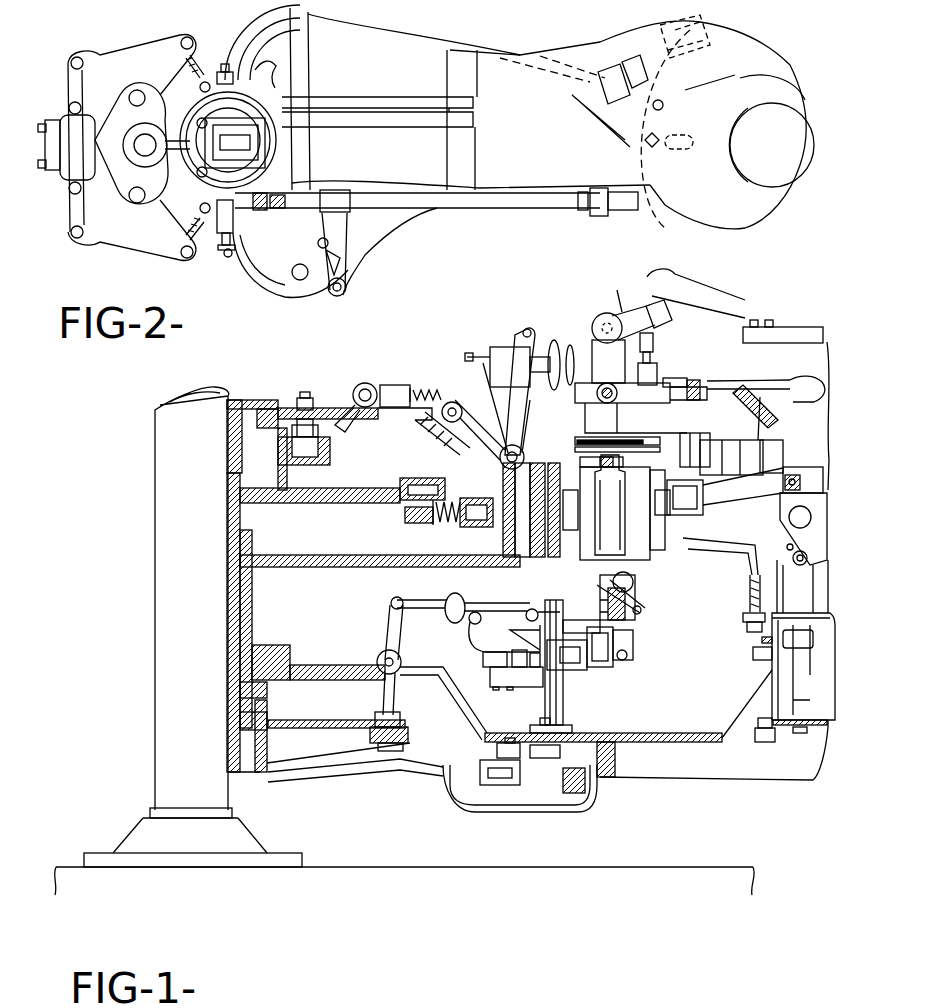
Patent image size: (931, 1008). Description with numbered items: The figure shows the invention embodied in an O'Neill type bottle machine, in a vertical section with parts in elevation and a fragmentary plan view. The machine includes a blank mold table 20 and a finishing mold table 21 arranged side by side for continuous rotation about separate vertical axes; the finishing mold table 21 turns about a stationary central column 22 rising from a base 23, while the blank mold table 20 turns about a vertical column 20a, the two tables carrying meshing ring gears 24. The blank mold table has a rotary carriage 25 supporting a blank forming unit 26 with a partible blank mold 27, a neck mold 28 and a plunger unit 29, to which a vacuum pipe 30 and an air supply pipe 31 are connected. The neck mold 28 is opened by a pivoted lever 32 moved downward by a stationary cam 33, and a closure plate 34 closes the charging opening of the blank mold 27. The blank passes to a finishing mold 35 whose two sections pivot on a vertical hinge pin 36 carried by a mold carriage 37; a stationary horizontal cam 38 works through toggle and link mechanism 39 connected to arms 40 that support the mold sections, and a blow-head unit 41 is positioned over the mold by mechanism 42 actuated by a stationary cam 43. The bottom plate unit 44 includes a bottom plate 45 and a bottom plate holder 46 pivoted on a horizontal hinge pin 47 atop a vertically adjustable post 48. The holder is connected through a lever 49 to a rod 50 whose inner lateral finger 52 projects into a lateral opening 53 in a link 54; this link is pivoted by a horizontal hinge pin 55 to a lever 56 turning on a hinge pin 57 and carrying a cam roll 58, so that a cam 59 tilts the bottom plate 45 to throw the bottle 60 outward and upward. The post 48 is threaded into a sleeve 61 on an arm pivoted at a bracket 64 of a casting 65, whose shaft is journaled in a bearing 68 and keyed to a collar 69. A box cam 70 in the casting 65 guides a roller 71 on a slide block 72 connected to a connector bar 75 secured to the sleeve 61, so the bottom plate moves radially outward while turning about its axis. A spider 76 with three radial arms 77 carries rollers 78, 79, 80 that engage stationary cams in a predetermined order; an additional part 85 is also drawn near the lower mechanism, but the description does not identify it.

In FIG. 1, the blank mold table 20 is at (771, 778).
In FIG. 2, the vertical column 20a is at (771, 145).
In FIG. 1, the finishing mold table 21 is at (336, 703).
In FIG. 1, the stationary central column 22 is at (155, 742).
In FIG. 1, the base 23 is at (455, 875).
In FIG. 1, the ring gears 24 is at (612, 778).
In FIG. 1, the rotary carriage 25 is at (764, 477).
In FIG. 1, the blank forming unit 26 is at (575, 430).
In FIG. 2, the partible blank mold 27 is at (250, 255).
In FIG. 1, the partible blank mold 27 is at (690, 517).
In FIG. 1, the neck mold 28 is at (577, 450).
In FIG. 1, the plunger unit 29 is at (610, 415).
In FIG. 1, the vacuum pipe 30 is at (808, 376).
In FIG. 2, the supply pipe 31 is at (535, 205).
In FIG. 1, the supply pipe 31 is at (718, 381).
In FIG. 1, the pivoted lever 32 is at (618, 316).
In FIG. 1, the stationary cam 33 is at (665, 282).
In FIG. 1, the closure plate 34 is at (745, 548).
In FIG. 1, the finishing mold 35 is at (645, 545).
In FIG. 2, the vertical hinge pin 36 is at (140, 150).
In FIG. 1, the vertical hinge pin 36 is at (590, 565).
In FIG. 1, the mold carriage 37 is at (435, 565).
In FIG. 1, the stationary horizontal cam 38 is at (446, 490).
In FIG. 1, the toggle and link mechanism 39 is at (455, 522).
In FIG. 2, the arms 40 is at (220, 78).
In FIG. 1, the blow-head unit 41 is at (533, 350).
In FIG. 1, the mechanism 42 is at (400, 382).
In FIG. 1, the stationary cam 43 is at (330, 447).
In FIG. 1, the bottom plate unit 44 is at (615, 640).
In FIG. 1, the bottom plate 45 is at (612, 555).
In FIG. 1, the bottom plate holder 46 is at (633, 582).
In FIG. 1, the horizontal hinge pin 47 is at (605, 595).
In FIG. 1, the vertically adjustable post 48 is at (606, 606).
In FIG. 1, the lever 49 is at (640, 602).
In FIG. 1, the rod 50 is at (588, 620).
In FIG. 1, the lateral finger 52 is at (470, 623).
In FIG. 1, the lateral opening 53 is at (458, 598).
In FIG. 1, the link 54 is at (433, 609).
In FIG. 1, the horizontal hinge pin 55 is at (392, 601).
In FIG. 1, the lever 56 is at (396, 690).
In FIG. 1, the hinge pin 57 is at (401, 662).
In FIG. 1, the cam roll 58 is at (385, 712).
In FIG. 1, the cam 59 is at (370, 735).
In FIG. 1, the bottle 60 is at (615, 507).
In FIG. 1, the sleeve 61 is at (632, 650).
In FIG. 1, the bracket 64 is at (578, 670).
In FIG. 1, the casting 65 is at (540, 558).
In FIG. 1, the bearing 68 is at (564, 712).
In FIG. 1, the collar 69 is at (564, 690).
In FIG. 1, the box cam 70 is at (510, 640).
In FIG. 1, the roller 71 is at (518, 670).
In FIG. 1, the slide block 72 is at (492, 678).
In FIG. 1, the connector bar 75 is at (481, 645).
In FIG. 1, the spider 76 is at (562, 752).
In FIG. 1, the radial arms 77 is at (500, 750).
In FIG. 1, the roller 78 is at (575, 795).
In FIG. 1, the roller 79 is at (500, 775).
In FIG. 1, the roller 80 is at (537, 730).
In FIG. 1, the pipe 85 is at (555, 805).